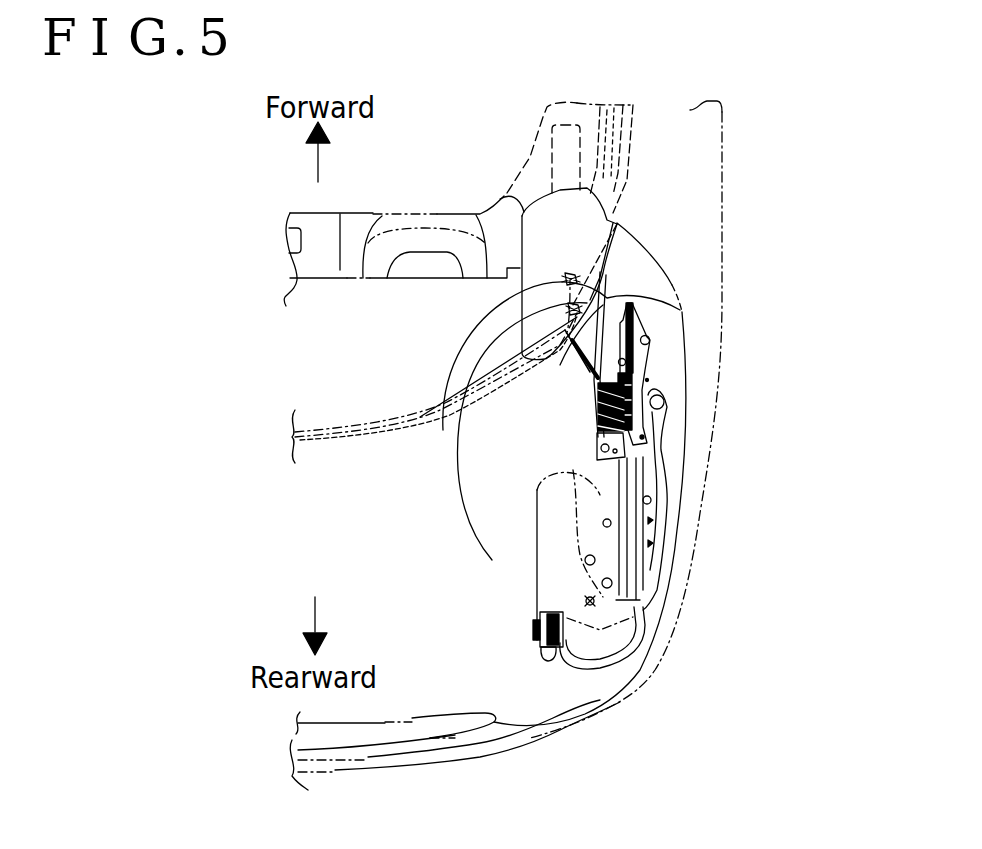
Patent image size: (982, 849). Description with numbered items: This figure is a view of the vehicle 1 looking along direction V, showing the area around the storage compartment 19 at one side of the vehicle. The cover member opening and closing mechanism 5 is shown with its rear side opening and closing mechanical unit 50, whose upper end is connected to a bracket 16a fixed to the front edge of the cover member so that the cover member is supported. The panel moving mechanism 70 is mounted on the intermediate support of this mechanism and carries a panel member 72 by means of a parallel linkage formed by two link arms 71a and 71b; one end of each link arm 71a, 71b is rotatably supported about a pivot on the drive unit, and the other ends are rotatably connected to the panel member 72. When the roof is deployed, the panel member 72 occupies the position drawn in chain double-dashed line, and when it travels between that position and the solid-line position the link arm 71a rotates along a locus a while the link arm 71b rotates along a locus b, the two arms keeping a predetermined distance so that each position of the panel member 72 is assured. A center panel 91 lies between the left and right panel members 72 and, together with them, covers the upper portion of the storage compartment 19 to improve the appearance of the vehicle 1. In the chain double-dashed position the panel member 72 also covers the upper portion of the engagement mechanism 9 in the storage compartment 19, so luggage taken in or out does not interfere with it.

The vehicle 1 is at (737, 223).
The cover member opening and closing mechanism 5 is at (678, 447).
The engagement mechanism 9 is at (520, 638).
The bracket 16a is at (647, 343).
The storage compartment 19 is at (386, 556).
The rear side opening and closing mechanical unit 50 is at (650, 380).
The panel moving mechanism 70 is at (603, 305).
The link arm 71a is at (587, 313).
The link arm 71b is at (600, 313).
The panel member 72 is at (600, 222).
The center panel 91 is at (337, 366).
The locus a is at (585, 561).
The locus b is at (586, 602).